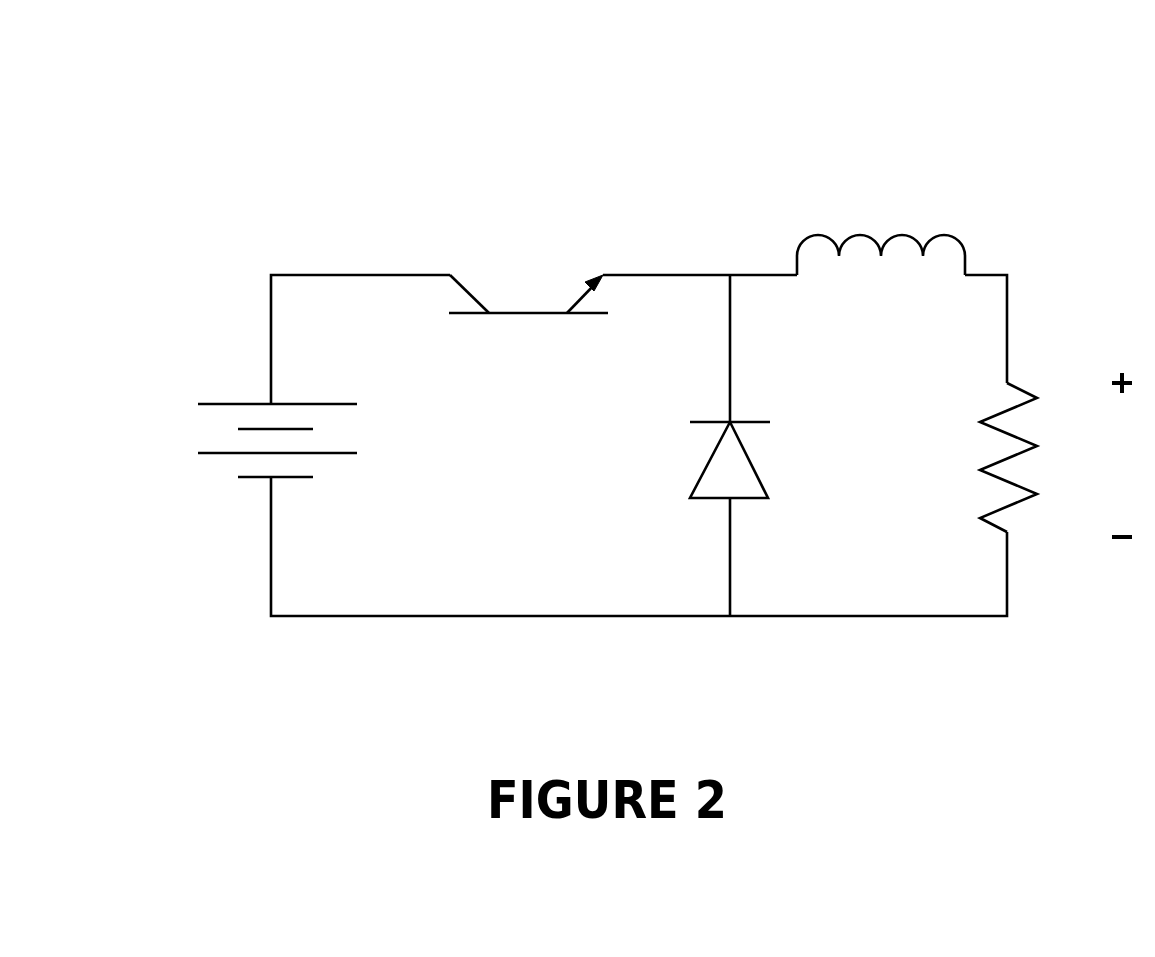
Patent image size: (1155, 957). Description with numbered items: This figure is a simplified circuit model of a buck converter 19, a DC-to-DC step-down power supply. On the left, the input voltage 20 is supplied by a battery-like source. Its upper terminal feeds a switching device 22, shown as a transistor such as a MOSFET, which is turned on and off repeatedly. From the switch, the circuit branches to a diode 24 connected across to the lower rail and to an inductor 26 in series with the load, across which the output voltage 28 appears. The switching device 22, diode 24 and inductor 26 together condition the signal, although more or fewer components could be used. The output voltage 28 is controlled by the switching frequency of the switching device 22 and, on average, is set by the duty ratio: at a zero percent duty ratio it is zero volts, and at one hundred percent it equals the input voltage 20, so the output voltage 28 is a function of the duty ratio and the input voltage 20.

The buck converter 19 is at (1017, 128).
The input voltage 20 is at (230, 404).
The switching device 22 is at (468, 285).
The diode 24 is at (762, 478).
The inductor 26 is at (895, 237).
The output voltage 28 is at (1037, 402).